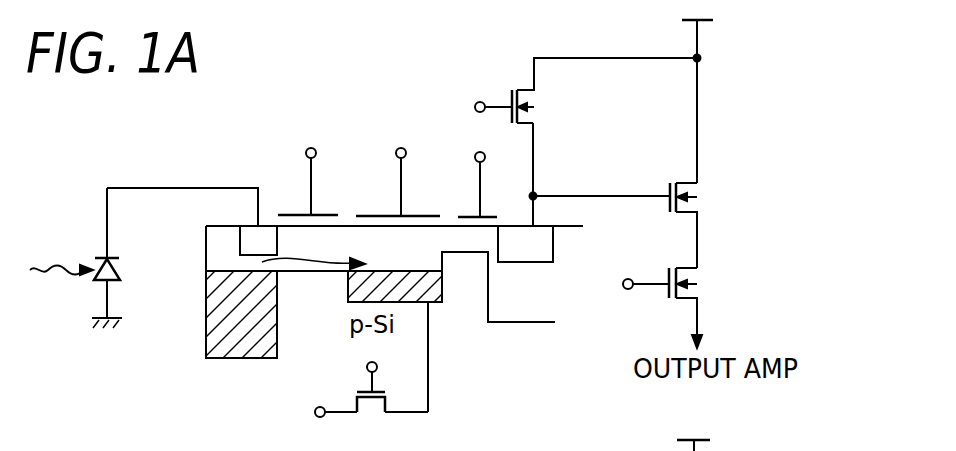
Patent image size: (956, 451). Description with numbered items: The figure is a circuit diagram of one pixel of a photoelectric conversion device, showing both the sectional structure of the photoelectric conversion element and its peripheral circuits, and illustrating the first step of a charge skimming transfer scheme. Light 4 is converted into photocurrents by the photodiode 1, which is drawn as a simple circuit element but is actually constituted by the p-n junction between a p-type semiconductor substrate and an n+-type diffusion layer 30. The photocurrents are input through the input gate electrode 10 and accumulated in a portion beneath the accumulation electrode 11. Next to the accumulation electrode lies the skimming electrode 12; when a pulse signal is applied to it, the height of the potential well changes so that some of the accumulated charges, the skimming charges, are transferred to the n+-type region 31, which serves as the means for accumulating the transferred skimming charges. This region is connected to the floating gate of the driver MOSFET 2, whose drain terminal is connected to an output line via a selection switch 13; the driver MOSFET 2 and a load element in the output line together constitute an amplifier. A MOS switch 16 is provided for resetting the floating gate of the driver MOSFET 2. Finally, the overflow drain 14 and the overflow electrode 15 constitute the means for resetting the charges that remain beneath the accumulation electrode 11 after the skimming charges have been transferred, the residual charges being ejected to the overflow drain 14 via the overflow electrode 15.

The photodiode 1 is at (121, 271).
The driver MOSFET 2 is at (700, 194).
The light 4 is at (63, 237).
The input gate electrode 10 is at (293, 213).
The accumulation electrode 11 is at (375, 214).
The skimming electrode 12 is at (465, 216).
The selection switch 13 is at (665, 297).
The overflow drain 14 is at (314, 412).
The overflow electrode 15 is at (365, 392).
The MOS switch 16 is at (510, 95).
The n+-type diffusion layer 30 is at (240, 240).
The n+-type region 31 is at (556, 243).